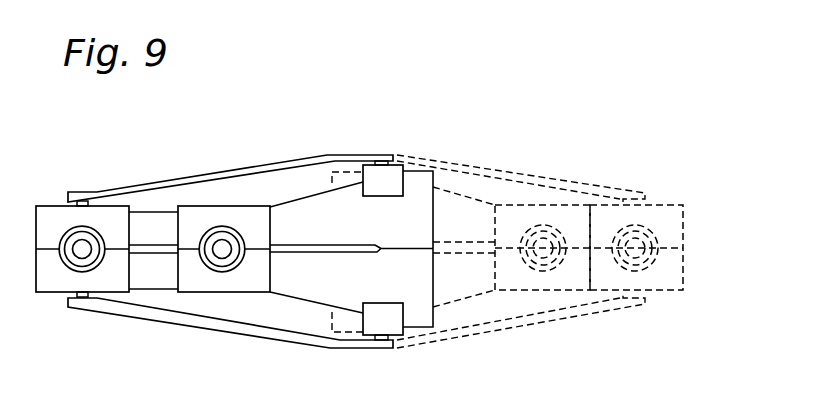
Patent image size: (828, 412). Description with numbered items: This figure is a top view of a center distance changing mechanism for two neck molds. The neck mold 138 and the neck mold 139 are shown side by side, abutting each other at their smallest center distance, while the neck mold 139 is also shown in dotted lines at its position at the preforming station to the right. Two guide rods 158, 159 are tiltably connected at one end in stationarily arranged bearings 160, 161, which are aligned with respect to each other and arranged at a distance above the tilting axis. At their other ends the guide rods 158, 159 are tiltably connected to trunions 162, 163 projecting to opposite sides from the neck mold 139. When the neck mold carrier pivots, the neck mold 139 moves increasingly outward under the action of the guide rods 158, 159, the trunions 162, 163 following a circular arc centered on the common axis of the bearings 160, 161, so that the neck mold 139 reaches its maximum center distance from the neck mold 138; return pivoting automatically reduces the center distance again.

The neck mold 138 is at (260, 293).
The neck mold 139 is at (43, 293).
The guide rod 158 is at (228, 323).
The guide rod 159 is at (195, 175).
The bearing 160 is at (381, 322).
The bearing 161 is at (380, 183).
The trunion 162 is at (72, 300).
The trunion 163 is at (66, 193).